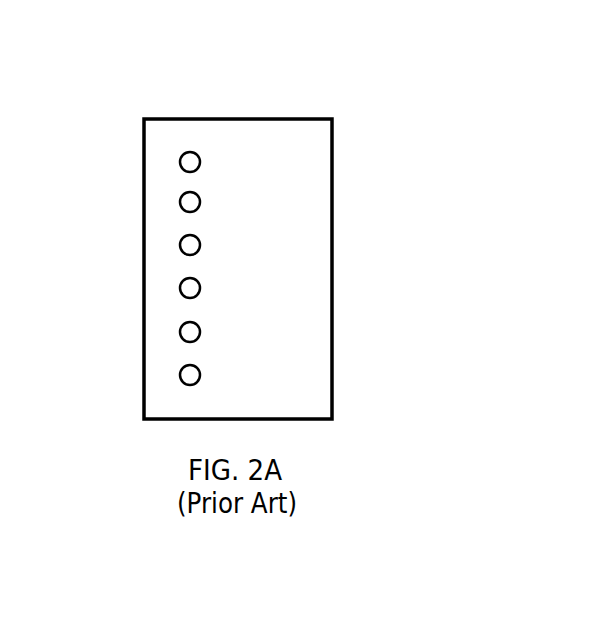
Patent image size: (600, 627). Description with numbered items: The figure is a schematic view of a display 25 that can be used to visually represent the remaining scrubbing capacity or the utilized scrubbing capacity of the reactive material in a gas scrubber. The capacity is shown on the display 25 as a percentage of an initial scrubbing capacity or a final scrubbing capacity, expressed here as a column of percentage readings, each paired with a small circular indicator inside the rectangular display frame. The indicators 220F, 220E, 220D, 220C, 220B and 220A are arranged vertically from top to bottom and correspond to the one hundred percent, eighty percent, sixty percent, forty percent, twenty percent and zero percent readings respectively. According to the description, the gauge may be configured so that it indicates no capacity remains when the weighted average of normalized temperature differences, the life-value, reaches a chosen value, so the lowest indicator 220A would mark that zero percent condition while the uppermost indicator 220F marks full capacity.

The display 25 is at (300, 86).
The 100% level indicator 220F is at (180, 162).
The 80% level indicator 220E is at (180, 202).
The 60% level indicator 220D is at (180, 245).
The 40% level indicator 220C is at (180, 288).
The 20% level indicator 220B is at (180, 332).
The 0% level indicator 220A is at (180, 375).